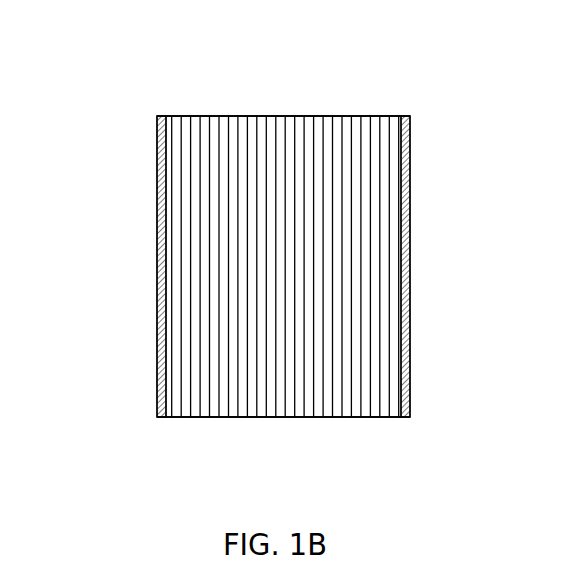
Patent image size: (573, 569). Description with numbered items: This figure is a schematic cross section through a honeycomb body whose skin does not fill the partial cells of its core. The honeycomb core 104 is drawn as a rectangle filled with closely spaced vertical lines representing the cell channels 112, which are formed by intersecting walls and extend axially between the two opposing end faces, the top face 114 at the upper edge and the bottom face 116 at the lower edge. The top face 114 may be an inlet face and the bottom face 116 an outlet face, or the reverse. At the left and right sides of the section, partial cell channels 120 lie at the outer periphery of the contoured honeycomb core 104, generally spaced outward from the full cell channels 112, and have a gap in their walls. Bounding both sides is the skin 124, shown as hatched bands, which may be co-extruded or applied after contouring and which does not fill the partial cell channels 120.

The honeycomb core 104 is at (318, 108).
The cell channels 112 is at (185, 214).
The top face 114 is at (275, 117).
The bottom face 116 is at (257, 418).
The partial cell channels 120 is at (172, 253).
The skin 124 is at (159, 332).